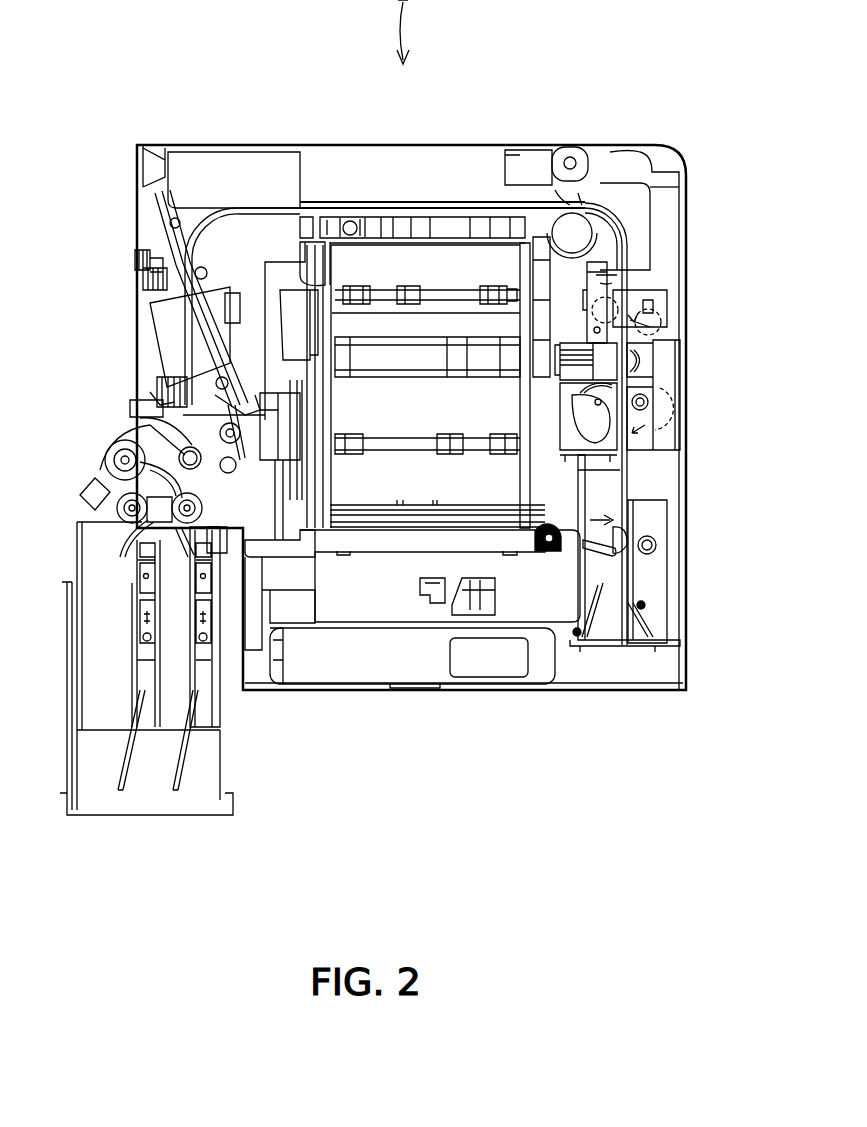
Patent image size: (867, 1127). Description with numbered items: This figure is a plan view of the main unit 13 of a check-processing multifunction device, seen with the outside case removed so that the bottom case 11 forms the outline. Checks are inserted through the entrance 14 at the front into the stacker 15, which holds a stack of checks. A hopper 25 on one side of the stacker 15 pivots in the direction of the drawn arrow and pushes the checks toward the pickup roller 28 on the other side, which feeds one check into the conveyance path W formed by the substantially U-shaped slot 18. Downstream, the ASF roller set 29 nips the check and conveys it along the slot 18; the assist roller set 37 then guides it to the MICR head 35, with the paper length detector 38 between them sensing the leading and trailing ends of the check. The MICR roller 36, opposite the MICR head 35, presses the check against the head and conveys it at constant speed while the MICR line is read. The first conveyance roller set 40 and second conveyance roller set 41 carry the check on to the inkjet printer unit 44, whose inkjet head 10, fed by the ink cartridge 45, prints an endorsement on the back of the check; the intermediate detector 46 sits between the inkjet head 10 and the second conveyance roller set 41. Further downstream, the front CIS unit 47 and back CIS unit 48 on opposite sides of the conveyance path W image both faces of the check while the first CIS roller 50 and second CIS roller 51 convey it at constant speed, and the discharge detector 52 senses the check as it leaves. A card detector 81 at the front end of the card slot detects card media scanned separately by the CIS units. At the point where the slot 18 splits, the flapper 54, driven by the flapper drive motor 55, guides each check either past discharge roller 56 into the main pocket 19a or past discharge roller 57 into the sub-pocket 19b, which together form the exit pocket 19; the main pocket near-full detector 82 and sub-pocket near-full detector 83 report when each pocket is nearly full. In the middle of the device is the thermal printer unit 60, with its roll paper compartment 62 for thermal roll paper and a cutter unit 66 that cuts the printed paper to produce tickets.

The inkjet head 10 is at (264, 212).
The bottom case 11 is at (637, 668).
The main unit 13 is at (591, 146).
The entrance 14 is at (612, 615).
The stacker 15 is at (618, 577).
The slot 18 is at (461, 208).
The exit pocket 19 is at (190, 893).
The main pocket 19a is at (100, 708).
The sub-pocket 19b is at (170, 708).
The hopper 25 is at (585, 495).
The pickup roller 28 is at (630, 530).
The ASF roller set 29 is at (640, 430).
The MICR head 35 is at (608, 277).
The MICR roller 36 is at (626, 238).
The assist roller set 37 is at (632, 326).
The paper length detector 38 is at (612, 300).
The first conveyance roller set 40 is at (583, 205).
The second conveyance roller set 41 is at (348, 200).
The inkjet printer unit 44 is at (243, 210).
The ink cartridge 45 is at (411, 690).
The intermediate detector 46 is at (303, 210).
The front CIS unit 47 is at (150, 322).
The back CIS unit 48 is at (200, 330).
The first CIS roller 50 is at (138, 260).
The second CIS roller 51 is at (150, 378).
The discharge detector 52 is at (158, 393).
The flapper 54 is at (140, 416).
The flapper drive motor 55 is at (103, 457).
The discharge roller 56 is at (108, 523).
The discharge roller 57 is at (120, 495).
The thermal printer unit 60 is at (405, 485).
The roll paper compartment 62 is at (446, 400).
The cutter unit 66 is at (348, 595).
The card detector 81 is at (107, 470).
The main pocket near-full detector 82 is at (138, 620).
The sub-pocket near-full detector 83 is at (138, 685).
The conveyance path W is at (420, 205).